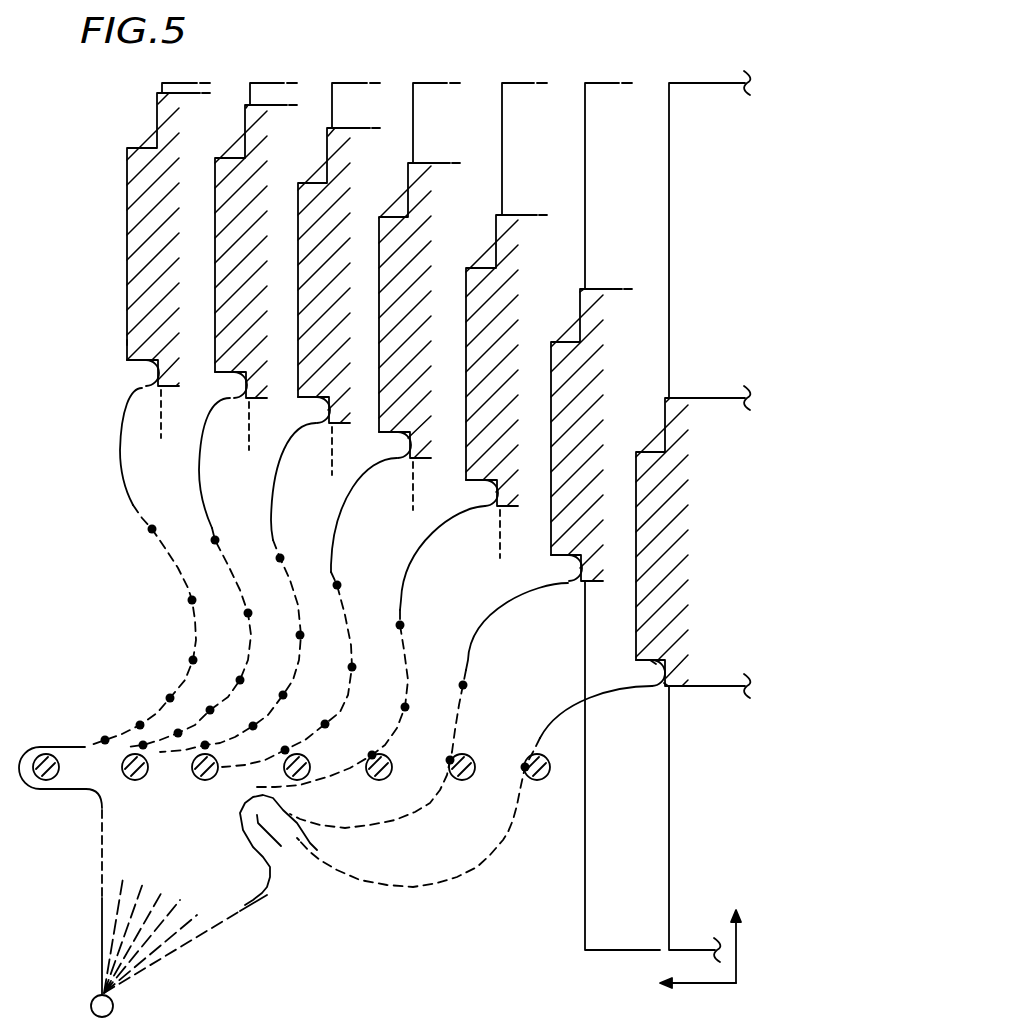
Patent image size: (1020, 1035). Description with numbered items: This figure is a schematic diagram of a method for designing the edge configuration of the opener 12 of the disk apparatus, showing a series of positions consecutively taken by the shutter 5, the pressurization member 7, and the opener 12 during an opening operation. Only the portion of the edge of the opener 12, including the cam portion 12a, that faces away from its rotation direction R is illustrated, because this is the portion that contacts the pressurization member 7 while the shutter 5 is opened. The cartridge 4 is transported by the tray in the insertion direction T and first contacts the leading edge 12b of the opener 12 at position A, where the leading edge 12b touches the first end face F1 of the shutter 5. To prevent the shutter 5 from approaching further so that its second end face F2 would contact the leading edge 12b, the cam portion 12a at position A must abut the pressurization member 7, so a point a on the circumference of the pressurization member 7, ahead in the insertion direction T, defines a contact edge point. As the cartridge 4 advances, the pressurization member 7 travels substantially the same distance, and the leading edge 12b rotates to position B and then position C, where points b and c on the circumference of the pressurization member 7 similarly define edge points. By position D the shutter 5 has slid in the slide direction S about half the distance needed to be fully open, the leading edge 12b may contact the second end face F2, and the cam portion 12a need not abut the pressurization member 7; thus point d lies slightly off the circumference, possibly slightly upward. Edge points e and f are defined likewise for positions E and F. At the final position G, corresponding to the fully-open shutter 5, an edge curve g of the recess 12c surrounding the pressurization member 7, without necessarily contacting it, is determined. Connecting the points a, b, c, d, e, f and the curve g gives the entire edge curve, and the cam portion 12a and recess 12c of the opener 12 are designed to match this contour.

The cartridge 4 is at (697, 84).
The shutter 5 is at (678, 408).
The pressurization member 7 is at (538, 779).
The opener 12 is at (242, 898).
The cam portion 12a is at (465, 870).
The leading edge 12b is at (665, 683).
The recess 12c is at (279, 850).
The first end face F1 is at (659, 657).
The second end face F2 is at (663, 678).
The rotation direction R is at (110, 350).
The slide direction S is at (734, 934).
The insertion direction T is at (685, 981).
The position A is at (651, 673).
The position B is at (568, 568).
The position C is at (485, 519).
The position D is at (398, 471).
The position E is at (317, 436).
The position F is at (234, 411).
The position G is at (145, 399).
The edge point a is at (339, 646).
The edge point b is at (321, 678).
The edge point c is at (283, 705).
The edge point d is at (218, 718).
The edge point e is at (165, 726).
The edge point f is at (157, 762).
The edge curve g is at (46, 785).